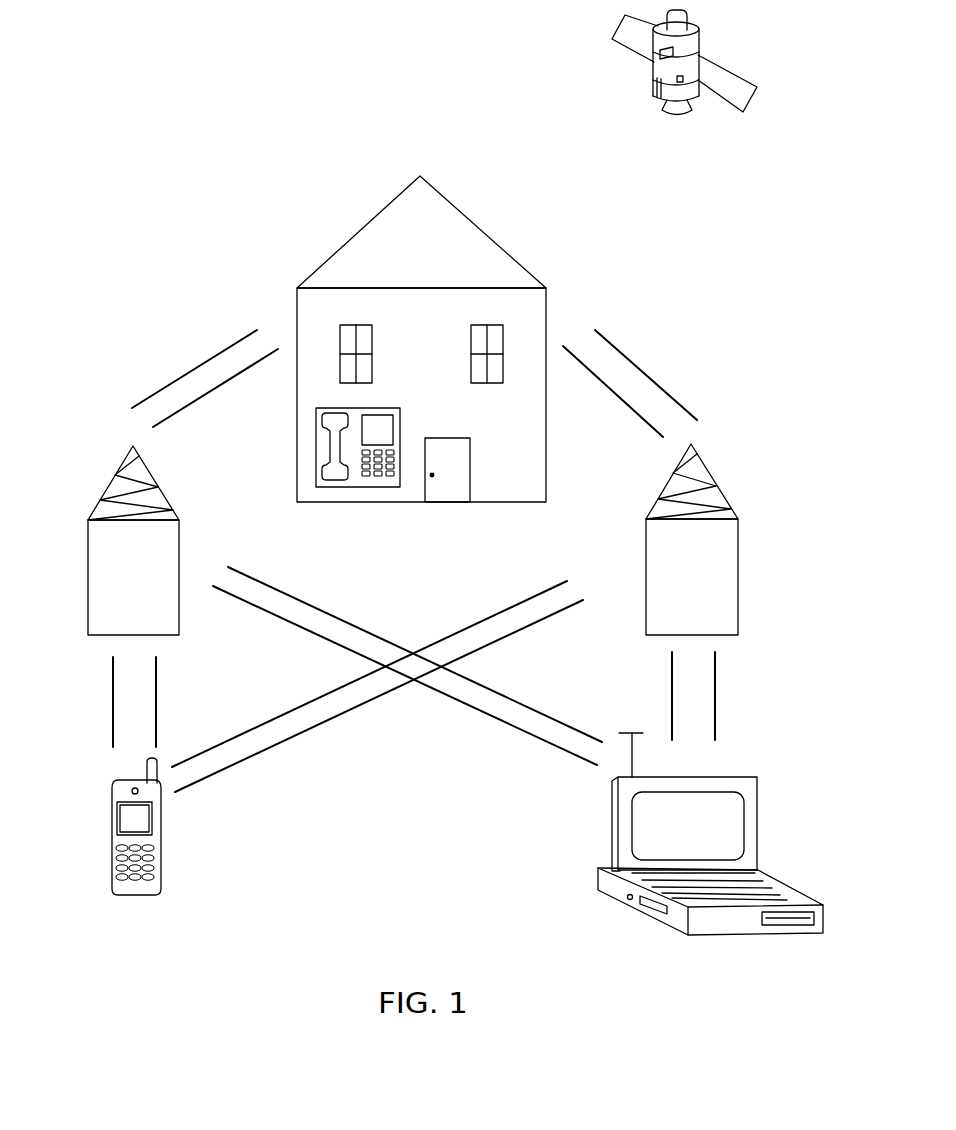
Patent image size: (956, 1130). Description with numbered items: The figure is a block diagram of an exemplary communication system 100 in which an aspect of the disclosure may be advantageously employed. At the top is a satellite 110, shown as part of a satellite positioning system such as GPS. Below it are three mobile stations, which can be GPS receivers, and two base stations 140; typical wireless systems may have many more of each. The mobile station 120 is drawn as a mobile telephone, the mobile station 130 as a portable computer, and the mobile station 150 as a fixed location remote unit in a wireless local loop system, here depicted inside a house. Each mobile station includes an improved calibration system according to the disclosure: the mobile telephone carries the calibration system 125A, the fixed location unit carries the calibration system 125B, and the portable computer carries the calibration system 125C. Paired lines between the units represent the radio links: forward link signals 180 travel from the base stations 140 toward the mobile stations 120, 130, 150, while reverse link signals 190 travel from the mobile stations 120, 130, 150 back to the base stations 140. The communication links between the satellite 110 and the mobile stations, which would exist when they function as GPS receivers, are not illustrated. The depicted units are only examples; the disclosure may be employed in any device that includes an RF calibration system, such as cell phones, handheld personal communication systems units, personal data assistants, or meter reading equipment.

The communication system 100 is at (150, 215).
The satellite 110 is at (660, 103).
The mobile station 120 is at (145, 826).
The improved calibration system 125A is at (140, 818).
The improved calibration system 125B is at (382, 433).
The improved calibration system 125C is at (678, 820).
The mobile station 130 is at (679, 834).
The base station 140 is at (112, 480).
The mobile station 150 is at (332, 476).
The forward link signals 180 is at (200, 363).
The reverse link signals 190 is at (202, 400).